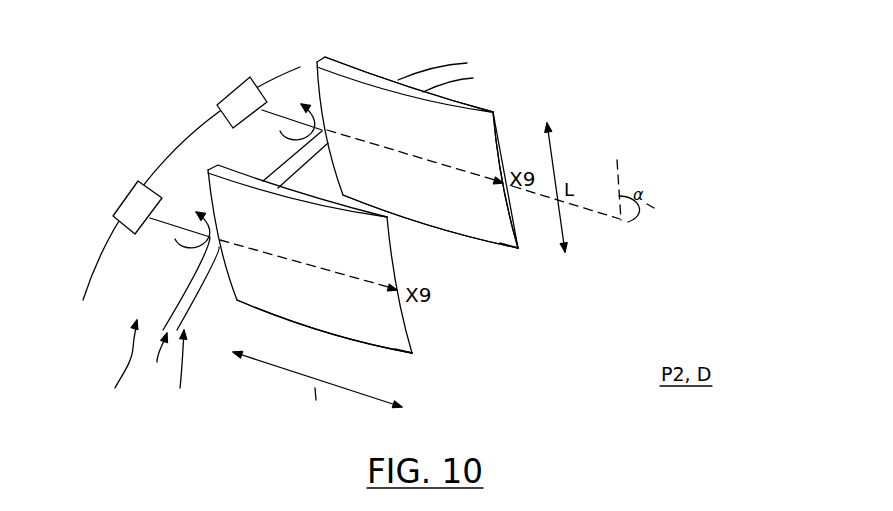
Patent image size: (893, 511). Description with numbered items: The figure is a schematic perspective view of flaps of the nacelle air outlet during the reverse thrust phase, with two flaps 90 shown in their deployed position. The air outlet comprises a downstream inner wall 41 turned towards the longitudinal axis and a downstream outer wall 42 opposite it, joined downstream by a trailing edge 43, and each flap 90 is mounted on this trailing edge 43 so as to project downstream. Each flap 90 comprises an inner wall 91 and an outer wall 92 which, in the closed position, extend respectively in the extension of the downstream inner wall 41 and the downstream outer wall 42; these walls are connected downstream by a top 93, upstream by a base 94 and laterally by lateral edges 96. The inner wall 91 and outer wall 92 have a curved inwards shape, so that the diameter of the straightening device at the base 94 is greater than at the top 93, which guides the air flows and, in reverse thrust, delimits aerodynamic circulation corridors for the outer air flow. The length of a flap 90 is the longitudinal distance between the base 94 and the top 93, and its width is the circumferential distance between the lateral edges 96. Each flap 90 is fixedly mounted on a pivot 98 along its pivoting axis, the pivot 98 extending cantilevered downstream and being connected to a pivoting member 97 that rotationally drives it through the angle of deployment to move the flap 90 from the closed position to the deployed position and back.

The downstream inner wall 41 is at (179, 376).
The downstream outer wall 42 is at (120, 371).
The trailing edge 43 is at (162, 362).
The flap 90 is at (523, 249).
The inner wall 91 is at (497, 247).
The outer wall 92 is at (481, 203).
The top 93 is at (497, 130).
The base 94 is at (234, 276).
The lateral edges 96 is at (367, 74).
The pivoting member 97 is at (217, 157).
The pivot 98 is at (280, 105).